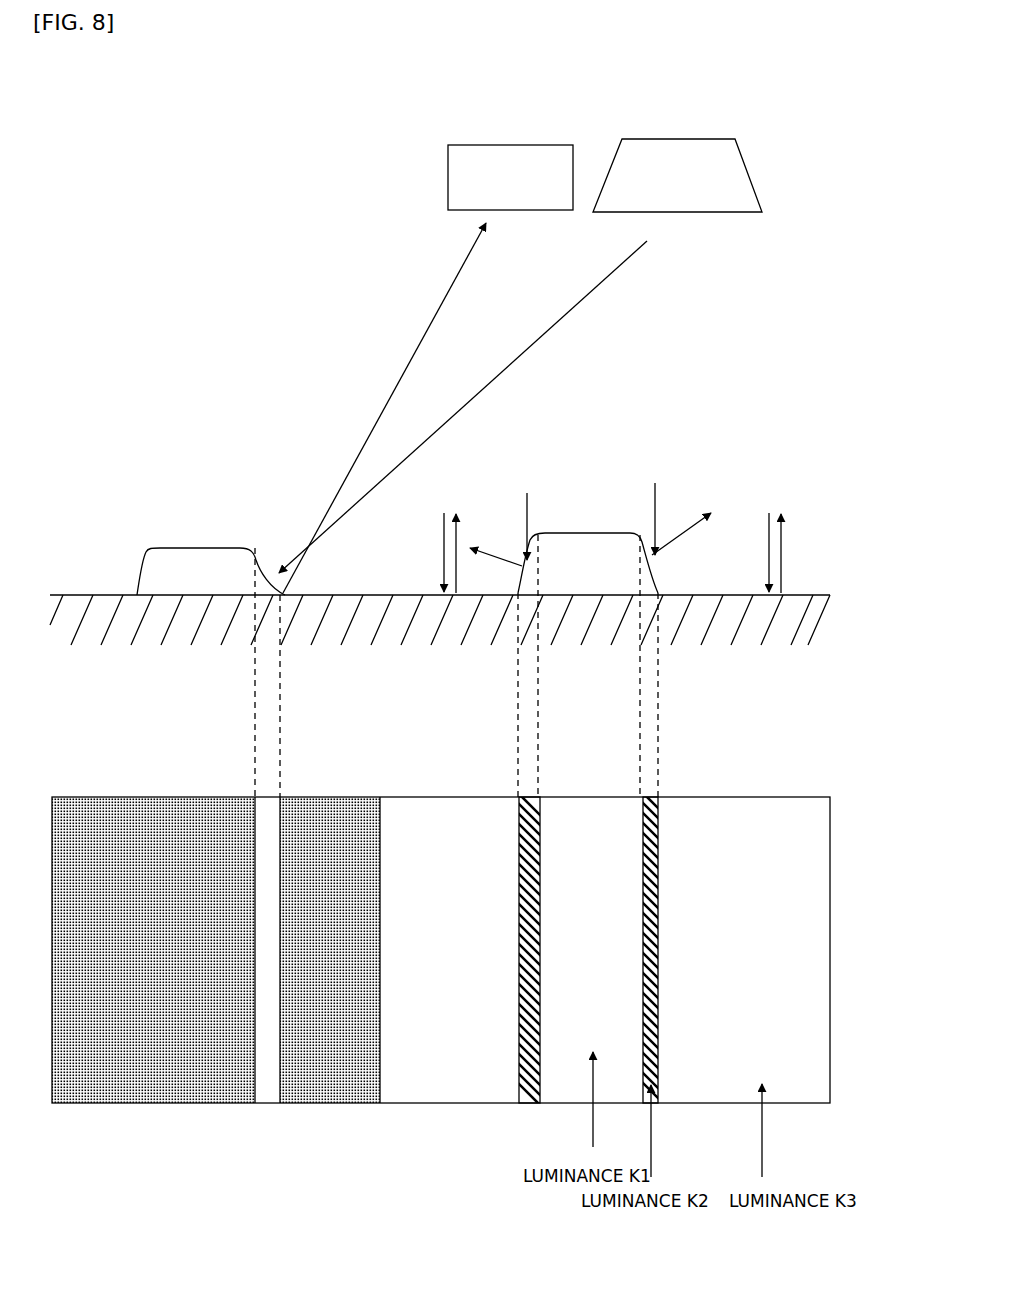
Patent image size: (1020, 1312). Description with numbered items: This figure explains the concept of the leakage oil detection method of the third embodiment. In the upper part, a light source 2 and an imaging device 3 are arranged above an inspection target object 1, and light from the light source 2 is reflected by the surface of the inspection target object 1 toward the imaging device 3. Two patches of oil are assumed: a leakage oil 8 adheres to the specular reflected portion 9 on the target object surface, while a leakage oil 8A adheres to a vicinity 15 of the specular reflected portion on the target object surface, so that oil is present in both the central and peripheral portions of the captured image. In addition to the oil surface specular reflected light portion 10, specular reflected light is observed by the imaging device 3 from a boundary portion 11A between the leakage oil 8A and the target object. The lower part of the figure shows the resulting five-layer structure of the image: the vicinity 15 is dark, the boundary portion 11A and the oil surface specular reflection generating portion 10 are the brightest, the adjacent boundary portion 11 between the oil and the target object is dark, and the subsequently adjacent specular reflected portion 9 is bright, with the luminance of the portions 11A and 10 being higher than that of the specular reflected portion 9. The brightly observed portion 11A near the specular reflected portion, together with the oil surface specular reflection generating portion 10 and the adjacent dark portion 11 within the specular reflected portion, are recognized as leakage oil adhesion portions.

The inspection target object 1 is at (777, 613).
The light source 2 is at (668, 156).
The imaging device 3 is at (507, 156).
The leakage oil 8 is at (588, 545).
The leakage oil 8A is at (200, 560).
The specular reflected portion of the target object surface 9 is at (812, 963).
The oil surface specular reflected light portion 10 is at (563, 1092).
The boundary portion between the oil and the target object 11 is at (525, 1055).
The boundary portion between the leakage oil and the target object 11A is at (272, 1085).
The vicinity of the specular reflected portion 15 is at (150, 808).